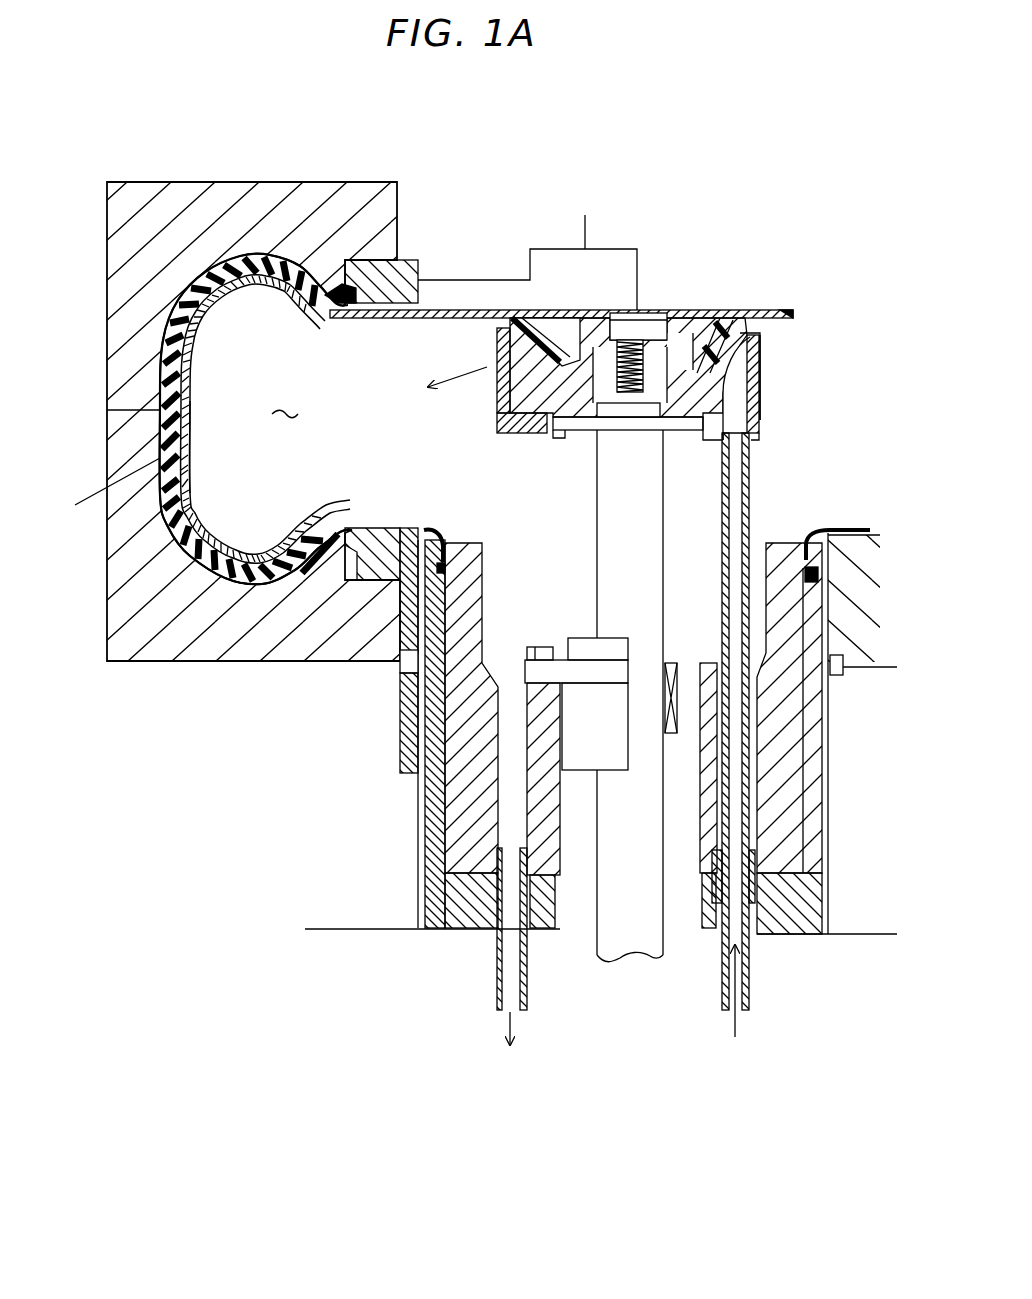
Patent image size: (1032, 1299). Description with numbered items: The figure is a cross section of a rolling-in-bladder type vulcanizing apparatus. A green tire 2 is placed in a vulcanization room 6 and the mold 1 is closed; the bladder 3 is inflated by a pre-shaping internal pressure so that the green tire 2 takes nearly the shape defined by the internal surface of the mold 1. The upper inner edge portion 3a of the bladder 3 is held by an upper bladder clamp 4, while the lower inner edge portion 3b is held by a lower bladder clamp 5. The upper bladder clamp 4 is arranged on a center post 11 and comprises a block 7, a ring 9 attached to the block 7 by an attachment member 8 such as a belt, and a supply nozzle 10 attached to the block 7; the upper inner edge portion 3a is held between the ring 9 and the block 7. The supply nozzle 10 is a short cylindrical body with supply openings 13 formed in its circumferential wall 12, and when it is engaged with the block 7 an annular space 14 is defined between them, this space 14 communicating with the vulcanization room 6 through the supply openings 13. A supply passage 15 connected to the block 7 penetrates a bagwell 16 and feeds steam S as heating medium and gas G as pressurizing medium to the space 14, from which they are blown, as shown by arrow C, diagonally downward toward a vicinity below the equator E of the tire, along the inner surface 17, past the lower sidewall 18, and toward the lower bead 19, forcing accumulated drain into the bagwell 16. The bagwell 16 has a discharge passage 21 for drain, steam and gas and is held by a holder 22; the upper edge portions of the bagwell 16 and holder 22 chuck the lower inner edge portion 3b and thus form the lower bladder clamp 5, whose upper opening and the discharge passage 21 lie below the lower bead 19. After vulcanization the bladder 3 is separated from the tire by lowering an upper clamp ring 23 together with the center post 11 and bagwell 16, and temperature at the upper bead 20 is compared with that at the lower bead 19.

The mold 1 is at (150, 627).
The green tire 2 is at (236, 256).
The bladder 3 is at (287, 262).
The upper inner edge portion 3a is at (540, 307).
The lower inner edge portion 3b is at (395, 585).
The upper bladder clamp 4 is at (770, 357).
The lower bladder clamp 5 is at (487, 577).
The vulcanization room 6 is at (285, 397).
The block 7 is at (603, 363).
The attachment member 8 is at (628, 330).
The ring 9 is at (690, 318).
The supply nozzle 10 is at (745, 335).
The center post 11 is at (605, 485).
The circumferential wall 12 is at (752, 380).
The supply openings 13 is at (495, 368).
The annular space 14 is at (737, 398).
The supply passage 15 is at (735, 490).
The bagwell 16 is at (432, 822).
The inner surface 17 is at (200, 483).
The lower sidewall 18 is at (272, 600).
The lower bead 19 is at (318, 555).
The upper bead 20 is at (333, 262).
The discharge passage 21 is at (510, 820).
The holder 22 is at (440, 855).
The upper clamp ring 23 is at (456, 280).
The equator E is at (108, 501).
The arrow C is at (457, 363).
The steam S is at (598, 739).
The gas G is at (732, 1109).